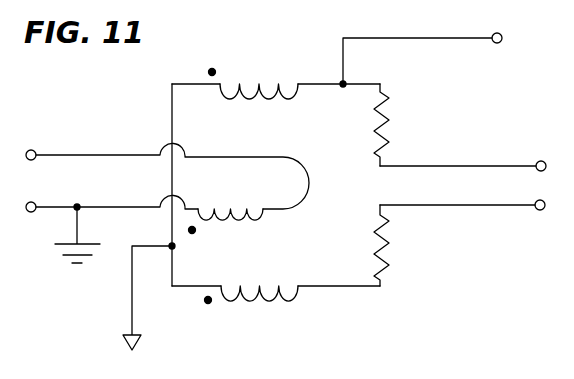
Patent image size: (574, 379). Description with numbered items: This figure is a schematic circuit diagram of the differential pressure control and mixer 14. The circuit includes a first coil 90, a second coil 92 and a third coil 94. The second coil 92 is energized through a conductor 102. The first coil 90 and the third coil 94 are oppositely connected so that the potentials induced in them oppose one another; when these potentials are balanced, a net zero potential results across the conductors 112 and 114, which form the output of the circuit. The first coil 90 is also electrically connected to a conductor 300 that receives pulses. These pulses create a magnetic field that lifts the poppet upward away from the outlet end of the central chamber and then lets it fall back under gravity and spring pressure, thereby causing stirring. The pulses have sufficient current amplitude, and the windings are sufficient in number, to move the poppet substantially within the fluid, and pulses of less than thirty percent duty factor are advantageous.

The differential pressure control and mixer 14 is at (488, 264).
The first coil 90 is at (267, 83).
The second coil 92 is at (242, 219).
The third coil 94 is at (262, 303).
The conductor 102 is at (113, 155).
The conductor 112 is at (360, 84).
The conductor 114 is at (352, 287).
The conductor 300 is at (420, 38).